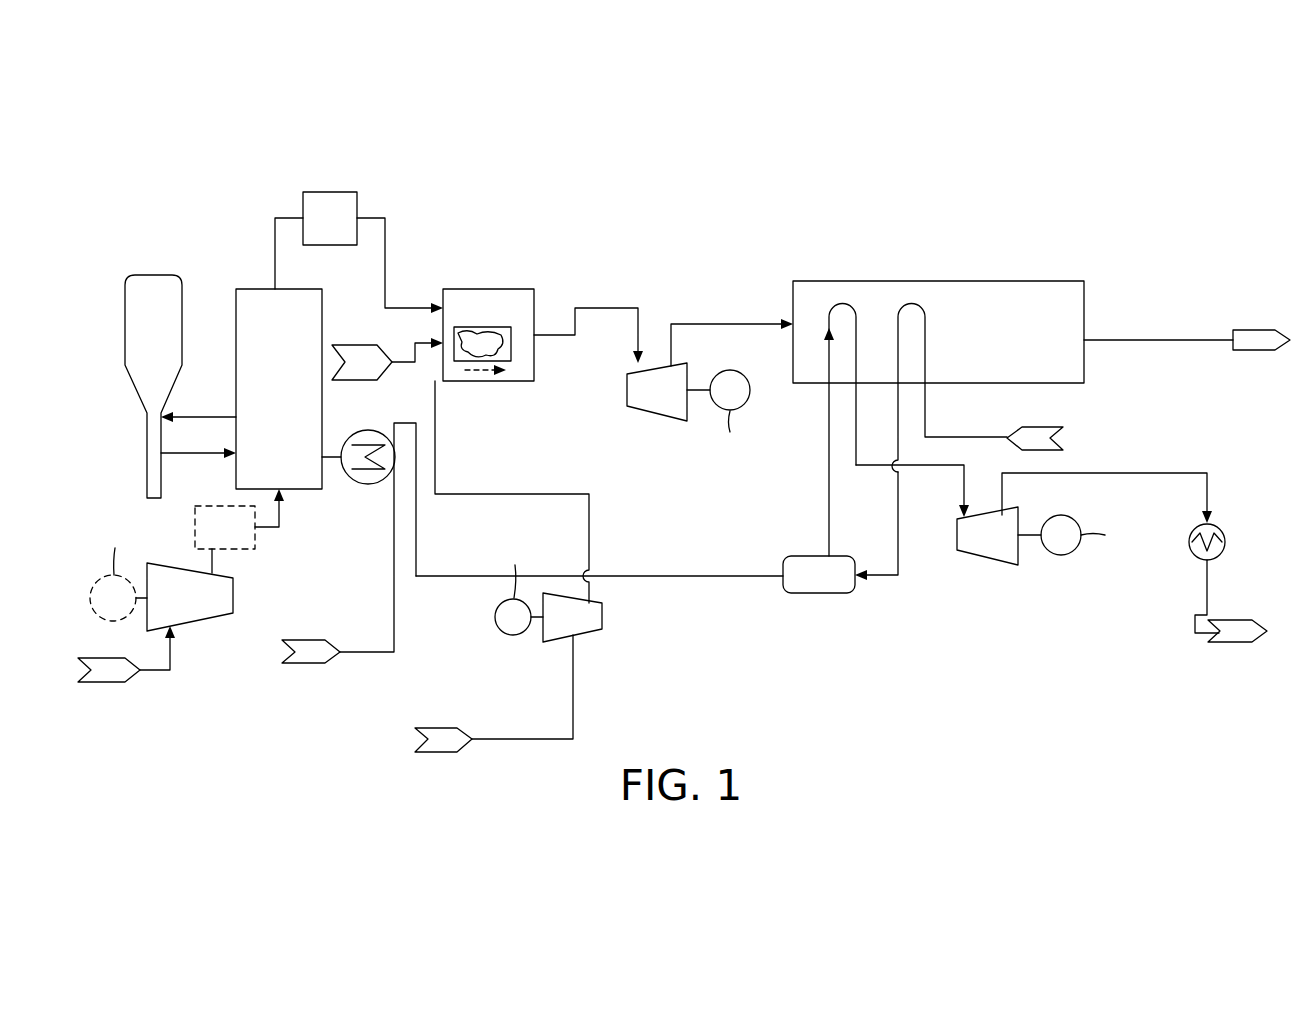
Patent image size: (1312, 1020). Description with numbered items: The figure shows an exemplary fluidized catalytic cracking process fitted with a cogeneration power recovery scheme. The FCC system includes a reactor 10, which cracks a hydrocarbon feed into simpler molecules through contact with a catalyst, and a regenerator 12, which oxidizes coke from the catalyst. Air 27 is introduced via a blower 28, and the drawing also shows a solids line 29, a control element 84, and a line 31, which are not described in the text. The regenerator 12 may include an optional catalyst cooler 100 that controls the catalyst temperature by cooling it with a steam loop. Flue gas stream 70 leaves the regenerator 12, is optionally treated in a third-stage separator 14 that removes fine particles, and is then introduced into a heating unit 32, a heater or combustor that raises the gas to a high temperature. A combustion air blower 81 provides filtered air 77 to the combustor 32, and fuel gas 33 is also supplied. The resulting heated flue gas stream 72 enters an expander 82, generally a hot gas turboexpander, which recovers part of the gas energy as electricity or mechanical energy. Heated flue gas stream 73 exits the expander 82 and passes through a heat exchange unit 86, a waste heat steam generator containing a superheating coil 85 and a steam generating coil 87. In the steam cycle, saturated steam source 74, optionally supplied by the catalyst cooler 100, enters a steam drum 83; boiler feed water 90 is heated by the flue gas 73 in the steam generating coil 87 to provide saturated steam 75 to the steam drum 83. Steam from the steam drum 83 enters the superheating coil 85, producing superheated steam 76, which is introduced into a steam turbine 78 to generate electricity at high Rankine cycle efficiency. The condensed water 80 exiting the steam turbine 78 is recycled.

The reactor 10 is at (125, 344).
The regenerator 12 is at (296, 289).
The third-stage separator 14 is at (331, 192).
The air 27 is at (153, 671).
The blower 28 is at (167, 565).
The solids recycle line 29 is at (205, 416).
The product gas line 31 is at (415, 307).
The heating unit 32 is at (488, 289).
The fuel gas 33 is at (357, 345).
The flue gas stream 70 is at (275, 254).
The heated flue gas stream 72 is at (608, 308).
The heated flue gas stream 73 is at (750, 324).
The saturated steam source 74 is at (449, 577).
The saturated steam 75 is at (898, 553).
The superheated steam 76 is at (926, 466).
The filtered air 77 is at (523, 740).
The steam turbine 78 is at (990, 560).
The fluid 80 is at (1208, 585).
The combustion air blower 81 is at (608, 616).
The expander 82 is at (658, 416).
The steam drum 83 is at (804, 556).
The control unit 84 is at (208, 506).
The superheating coil 85 is at (852, 303).
The heat exchange unit 86 is at (1065, 281).
The steam generating coil 87 is at (912, 303).
The boiler feed water 90 is at (361, 653).
The catalyst cooler 100 is at (368, 484).